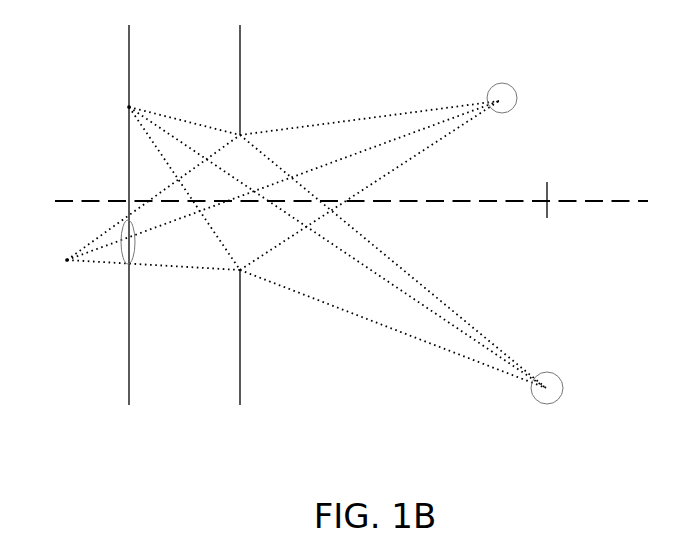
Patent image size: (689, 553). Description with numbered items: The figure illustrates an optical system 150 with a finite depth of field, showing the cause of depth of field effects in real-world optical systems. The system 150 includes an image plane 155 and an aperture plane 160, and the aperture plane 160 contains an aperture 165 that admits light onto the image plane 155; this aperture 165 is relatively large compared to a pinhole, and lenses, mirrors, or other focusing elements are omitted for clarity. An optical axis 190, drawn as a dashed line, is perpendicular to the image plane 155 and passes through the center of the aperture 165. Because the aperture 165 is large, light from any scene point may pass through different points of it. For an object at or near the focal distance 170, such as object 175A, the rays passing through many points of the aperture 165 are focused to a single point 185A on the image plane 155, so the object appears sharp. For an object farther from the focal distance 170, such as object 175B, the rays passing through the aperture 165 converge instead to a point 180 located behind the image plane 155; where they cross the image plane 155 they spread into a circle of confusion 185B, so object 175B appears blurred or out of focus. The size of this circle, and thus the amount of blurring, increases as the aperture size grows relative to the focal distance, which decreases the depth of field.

The optical system 150 is at (392, 37).
The image plane 155 is at (125, 245).
The aperture plane 160 is at (238, 251).
The aperture 165 is at (242, 253).
The focal distance 170 is at (547, 232).
The object 175A is at (562, 375).
The object 175B is at (505, 87).
The point 180 is at (51, 279).
The point 185A is at (130, 107).
The circle of confusion 185B is at (135, 240).
The optical axis 190 is at (593, 203).